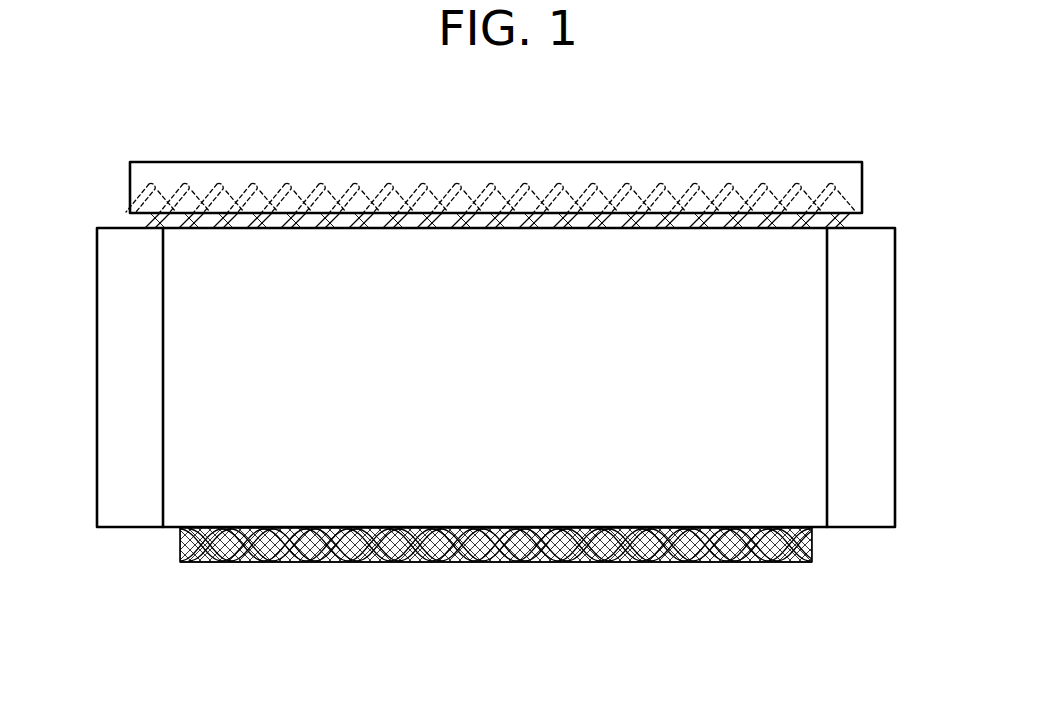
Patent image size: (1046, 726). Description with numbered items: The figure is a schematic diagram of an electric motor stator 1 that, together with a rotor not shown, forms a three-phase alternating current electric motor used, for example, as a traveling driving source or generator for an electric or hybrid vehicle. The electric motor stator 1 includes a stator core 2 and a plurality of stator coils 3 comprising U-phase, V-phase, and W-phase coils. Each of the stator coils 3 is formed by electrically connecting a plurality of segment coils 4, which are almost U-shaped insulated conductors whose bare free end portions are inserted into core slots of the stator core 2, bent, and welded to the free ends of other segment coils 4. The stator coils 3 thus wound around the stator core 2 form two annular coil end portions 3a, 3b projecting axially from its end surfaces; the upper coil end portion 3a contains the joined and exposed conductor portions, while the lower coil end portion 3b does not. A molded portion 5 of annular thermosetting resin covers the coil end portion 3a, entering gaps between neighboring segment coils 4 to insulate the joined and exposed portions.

The electric motor stator 1 is at (506, 356).
The stator core 2 is at (883, 313).
The stator coils 3 is at (455, 404).
The coil end portion 3a is at (145, 225).
The coil end portion 3b is at (527, 571).
The segment coils 4 is at (780, 561).
The molded portion 5 is at (484, 187).